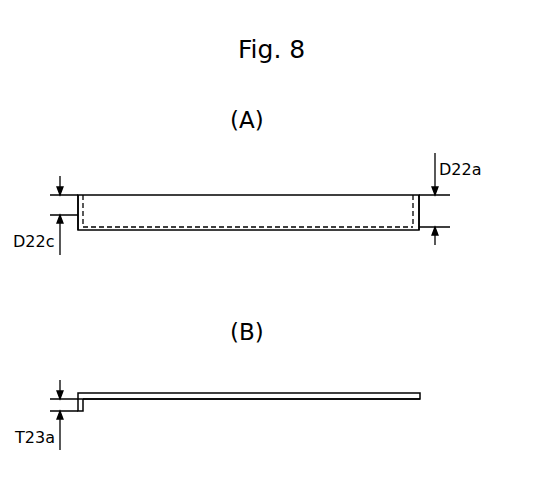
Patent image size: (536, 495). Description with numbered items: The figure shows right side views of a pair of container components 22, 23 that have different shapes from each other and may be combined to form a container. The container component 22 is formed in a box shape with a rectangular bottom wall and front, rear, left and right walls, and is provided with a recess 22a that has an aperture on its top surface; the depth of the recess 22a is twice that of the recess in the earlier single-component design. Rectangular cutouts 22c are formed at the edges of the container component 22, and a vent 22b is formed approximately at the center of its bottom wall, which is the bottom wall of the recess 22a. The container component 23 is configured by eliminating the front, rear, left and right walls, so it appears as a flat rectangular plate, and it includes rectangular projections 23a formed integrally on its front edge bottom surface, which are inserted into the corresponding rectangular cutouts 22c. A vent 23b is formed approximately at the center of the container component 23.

The container component 22 is at (145, 194).
The recess 22a is at (330, 212).
The vent 22b is at (250, 229).
The rectangular cutout 22c is at (78, 193).
The container component 23 is at (145, 392).
The rectangular projection 23a is at (84, 405).
The vent 23b is at (248, 400).